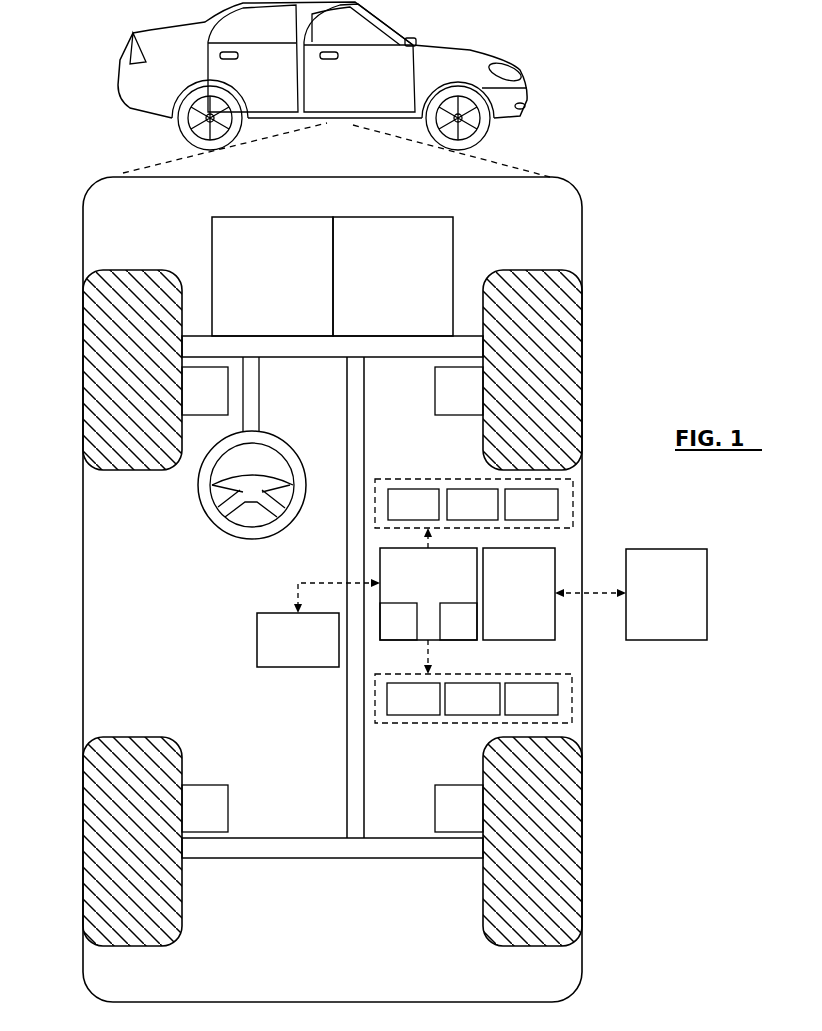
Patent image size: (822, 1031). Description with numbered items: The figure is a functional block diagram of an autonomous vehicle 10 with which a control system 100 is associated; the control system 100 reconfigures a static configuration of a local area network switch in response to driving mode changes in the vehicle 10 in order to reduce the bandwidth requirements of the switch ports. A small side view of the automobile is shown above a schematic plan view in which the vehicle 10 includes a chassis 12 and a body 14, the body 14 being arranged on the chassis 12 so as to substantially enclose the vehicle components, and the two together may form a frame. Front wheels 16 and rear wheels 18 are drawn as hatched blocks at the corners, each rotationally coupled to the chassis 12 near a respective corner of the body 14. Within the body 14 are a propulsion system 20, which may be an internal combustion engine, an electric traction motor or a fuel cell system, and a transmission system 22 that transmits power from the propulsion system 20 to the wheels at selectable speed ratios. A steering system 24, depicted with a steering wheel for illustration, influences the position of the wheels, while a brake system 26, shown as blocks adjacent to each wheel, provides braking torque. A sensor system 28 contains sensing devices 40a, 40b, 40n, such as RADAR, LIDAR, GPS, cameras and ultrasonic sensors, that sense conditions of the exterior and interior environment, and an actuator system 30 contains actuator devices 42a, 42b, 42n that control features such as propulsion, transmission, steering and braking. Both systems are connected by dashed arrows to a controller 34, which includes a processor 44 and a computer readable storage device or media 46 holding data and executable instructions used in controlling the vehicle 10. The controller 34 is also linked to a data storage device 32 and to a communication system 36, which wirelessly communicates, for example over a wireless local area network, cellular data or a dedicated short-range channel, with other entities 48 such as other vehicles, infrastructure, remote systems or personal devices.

The vehicle 10 is at (123, 60).
The control system 100 is at (617, 185).
The chassis 12 is at (345, 766).
The body 14 is at (83, 560).
The front wheels 16 is at (133, 270).
The rear wheels 18 is at (133, 945).
The propulsion system 20 is at (259, 289).
The transmission system 22 is at (379, 289).
The steering system 24 is at (270, 414).
The brake system 26 is at (192, 402).
The sensor system 28 is at (423, 474).
The actuator system 30 is at (433, 725).
The data storage device 32 is at (285, 651).
The controller 34 is at (415, 594).
The communication system 36 is at (506, 604).
The sensing device 40a is at (394, 520).
The sensing device 40b is at (453, 520).
The sensing device 40n is at (512, 520).
The actuator device 42a is at (394, 714).
The actuator device 42b is at (453, 714).
The actuator device 42n is at (512, 714).
The processor 44 is at (411, 633).
The computer readable storage device or media 46 is at (471, 633).
The other entities 48 is at (653, 604).